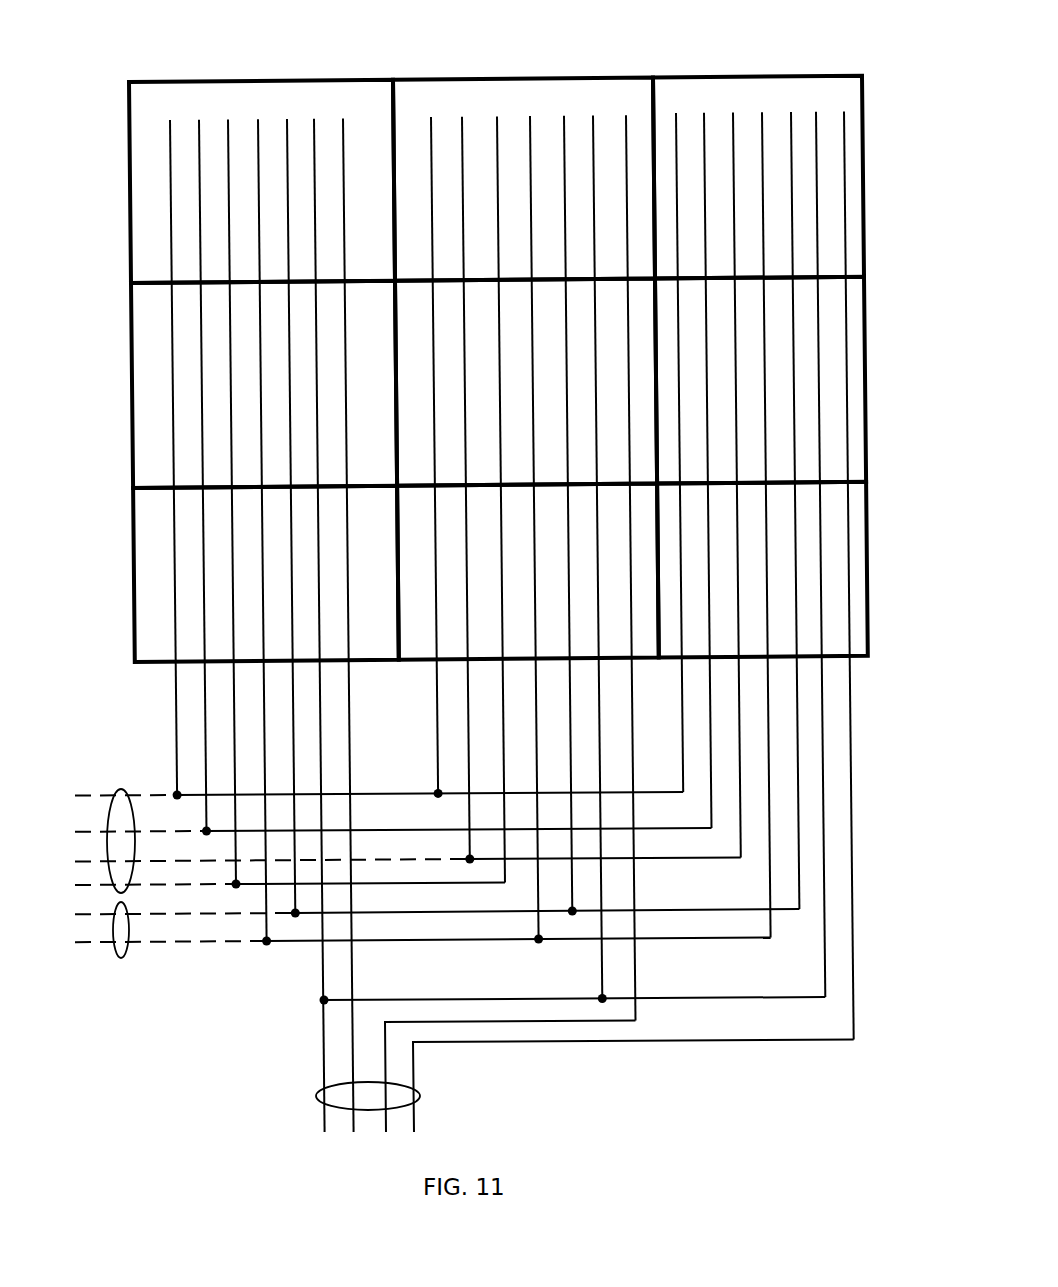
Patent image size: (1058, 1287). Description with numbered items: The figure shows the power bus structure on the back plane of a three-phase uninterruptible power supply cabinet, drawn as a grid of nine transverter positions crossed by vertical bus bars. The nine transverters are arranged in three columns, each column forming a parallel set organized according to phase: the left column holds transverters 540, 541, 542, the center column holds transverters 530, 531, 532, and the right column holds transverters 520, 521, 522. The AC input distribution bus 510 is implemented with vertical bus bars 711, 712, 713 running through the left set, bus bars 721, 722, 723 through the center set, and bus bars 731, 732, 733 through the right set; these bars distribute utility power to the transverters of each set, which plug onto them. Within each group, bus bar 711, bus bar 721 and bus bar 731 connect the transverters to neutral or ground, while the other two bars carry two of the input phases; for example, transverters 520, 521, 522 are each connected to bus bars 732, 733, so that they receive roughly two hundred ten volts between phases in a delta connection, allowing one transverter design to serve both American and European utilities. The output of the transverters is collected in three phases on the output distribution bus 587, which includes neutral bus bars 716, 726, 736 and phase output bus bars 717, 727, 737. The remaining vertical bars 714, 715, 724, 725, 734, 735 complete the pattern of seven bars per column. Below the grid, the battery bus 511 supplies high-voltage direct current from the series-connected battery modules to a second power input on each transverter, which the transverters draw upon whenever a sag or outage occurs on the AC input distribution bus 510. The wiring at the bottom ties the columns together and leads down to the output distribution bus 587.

The AC input distribution bus 510 is at (121, 789).
The battery bus 511 is at (121, 958).
The transverter 520 is at (858, 605).
The transverter 521 is at (860, 440).
The transverter 522 is at (858, 258).
The transverter 530 is at (427, 643).
The transverter 531 is at (408, 306).
The transverter 532 is at (403, 85).
The transverter 540 is at (153, 638).
The transverter 541 is at (152, 463).
The transverter 542 is at (138, 93).
The output distribution bus 587 is at (420, 1096).
The bus bar 711 is at (170, 143).
The bus bar 712 is at (199, 166).
The bus bar 713 is at (228, 187).
The left block signal line 714 is at (258, 202).
The left block signal line 715 is at (287, 213).
The neutral bus bar 716 is at (314, 235).
The bus bar 717 is at (343, 249).
The bus bar 721 is at (431, 118).
The bus bar 722 is at (462, 120).
The bus bar 723 is at (497, 135).
The center block signal line 724 is at (530, 132).
The center block signal line 725 is at (564, 128).
The neutral bus bar 726 is at (593, 127).
The bus bar 727 is at (626, 130).
The bus bar 731 is at (676, 160).
The bus bar 732 is at (704, 178).
The bus bar 733 is at (733, 185).
The right block signal line 734 is at (762, 198).
The right block signal line 735 is at (791, 207).
The neutral bus bar 736 is at (816, 220).
The bus bar 737 is at (844, 234).